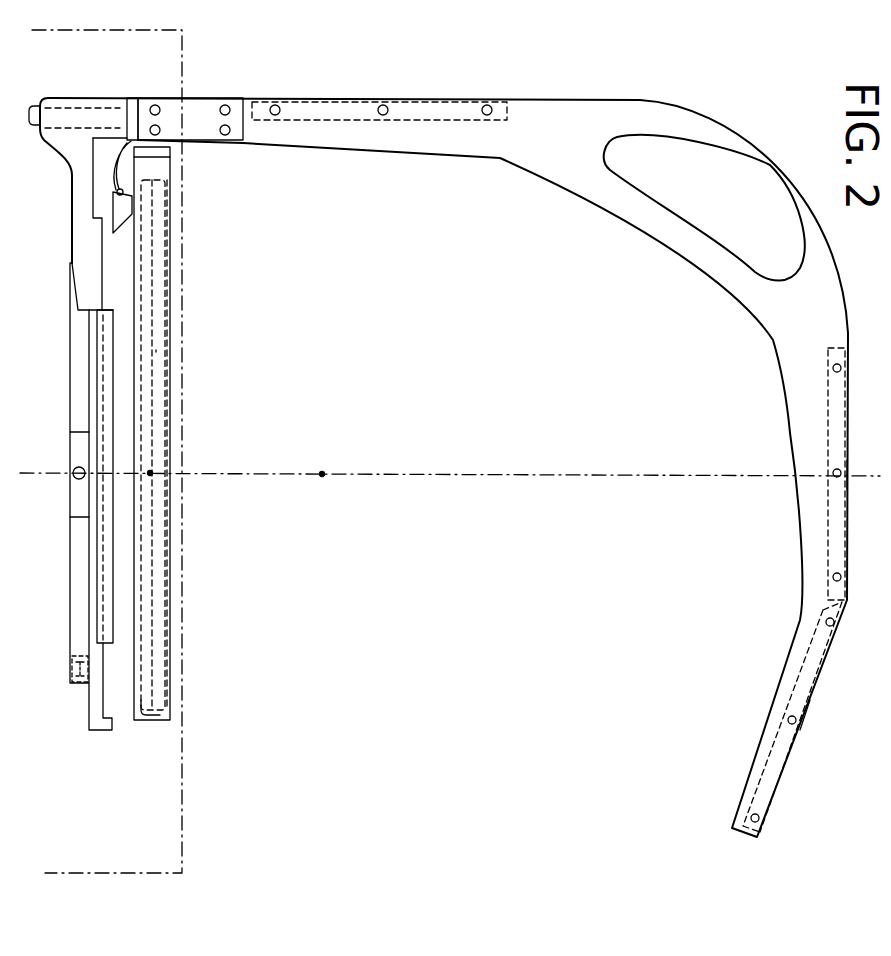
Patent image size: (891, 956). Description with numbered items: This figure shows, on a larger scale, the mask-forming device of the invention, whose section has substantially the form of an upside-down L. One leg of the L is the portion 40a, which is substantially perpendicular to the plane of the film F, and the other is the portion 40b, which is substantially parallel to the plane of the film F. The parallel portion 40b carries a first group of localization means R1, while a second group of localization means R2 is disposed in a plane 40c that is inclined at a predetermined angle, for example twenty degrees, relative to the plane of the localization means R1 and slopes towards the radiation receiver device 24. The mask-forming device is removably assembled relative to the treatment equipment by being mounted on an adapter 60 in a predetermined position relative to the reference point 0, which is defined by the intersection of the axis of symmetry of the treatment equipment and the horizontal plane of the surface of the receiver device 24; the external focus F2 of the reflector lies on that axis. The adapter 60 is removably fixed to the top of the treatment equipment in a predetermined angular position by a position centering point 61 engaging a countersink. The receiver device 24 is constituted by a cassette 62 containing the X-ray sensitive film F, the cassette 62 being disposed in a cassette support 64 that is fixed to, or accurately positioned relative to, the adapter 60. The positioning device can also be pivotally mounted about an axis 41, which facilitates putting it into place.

The axis 41 is at (32, 108).
The portion substantially perpendicular to the plane F 40a is at (538, 120).
The portion substantially parallel to the plane F 40b is at (835, 332).
The inclined plane 40c is at (750, 780).
The group of localization means R1 is at (851, 478).
The group of localization means R2 is at (806, 722).
The adapter 60 is at (80, 598).
The position centering point 61 is at (67, 667).
The radiation receiver device 24 is at (176, 588).
The cassette support 64 is at (167, 657).
The cassette 62 is at (156, 702).
The film F is at (156, 350).
The reference point 0 is at (150, 473).
The external focus F2 is at (322, 474).